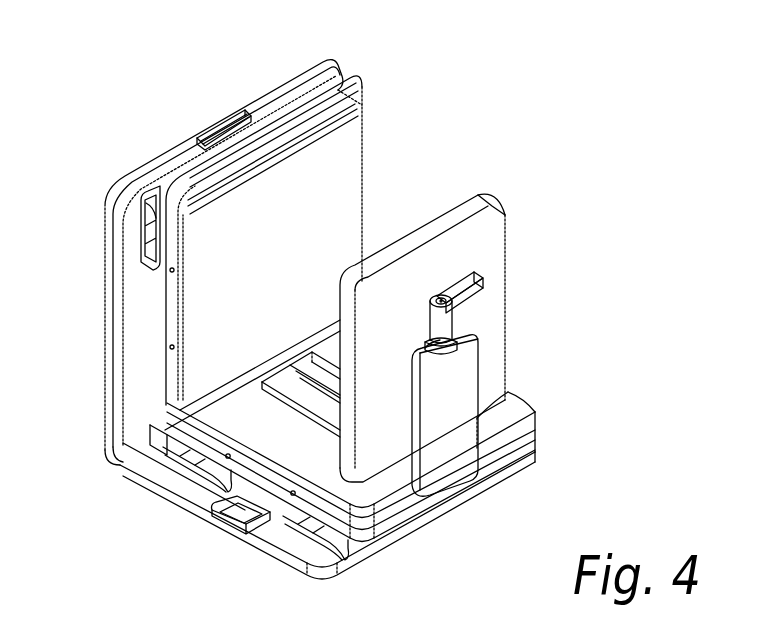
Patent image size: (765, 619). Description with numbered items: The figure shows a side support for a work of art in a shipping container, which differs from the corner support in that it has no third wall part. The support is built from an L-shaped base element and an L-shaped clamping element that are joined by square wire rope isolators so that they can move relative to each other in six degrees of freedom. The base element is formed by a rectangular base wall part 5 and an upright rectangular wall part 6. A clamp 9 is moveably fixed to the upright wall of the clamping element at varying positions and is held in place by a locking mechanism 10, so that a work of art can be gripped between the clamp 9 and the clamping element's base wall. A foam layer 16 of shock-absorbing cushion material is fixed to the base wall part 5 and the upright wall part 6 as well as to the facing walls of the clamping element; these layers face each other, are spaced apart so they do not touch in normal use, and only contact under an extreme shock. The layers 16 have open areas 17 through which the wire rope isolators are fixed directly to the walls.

The base wall part 5 is at (222, 121).
The upright wall part 6 is at (232, 537).
The clamp 9 is at (485, 223).
The locking mechanism 10 is at (445, 328).
The foam layer 16 is at (343, 79).
The open areas 17 is at (136, 230).